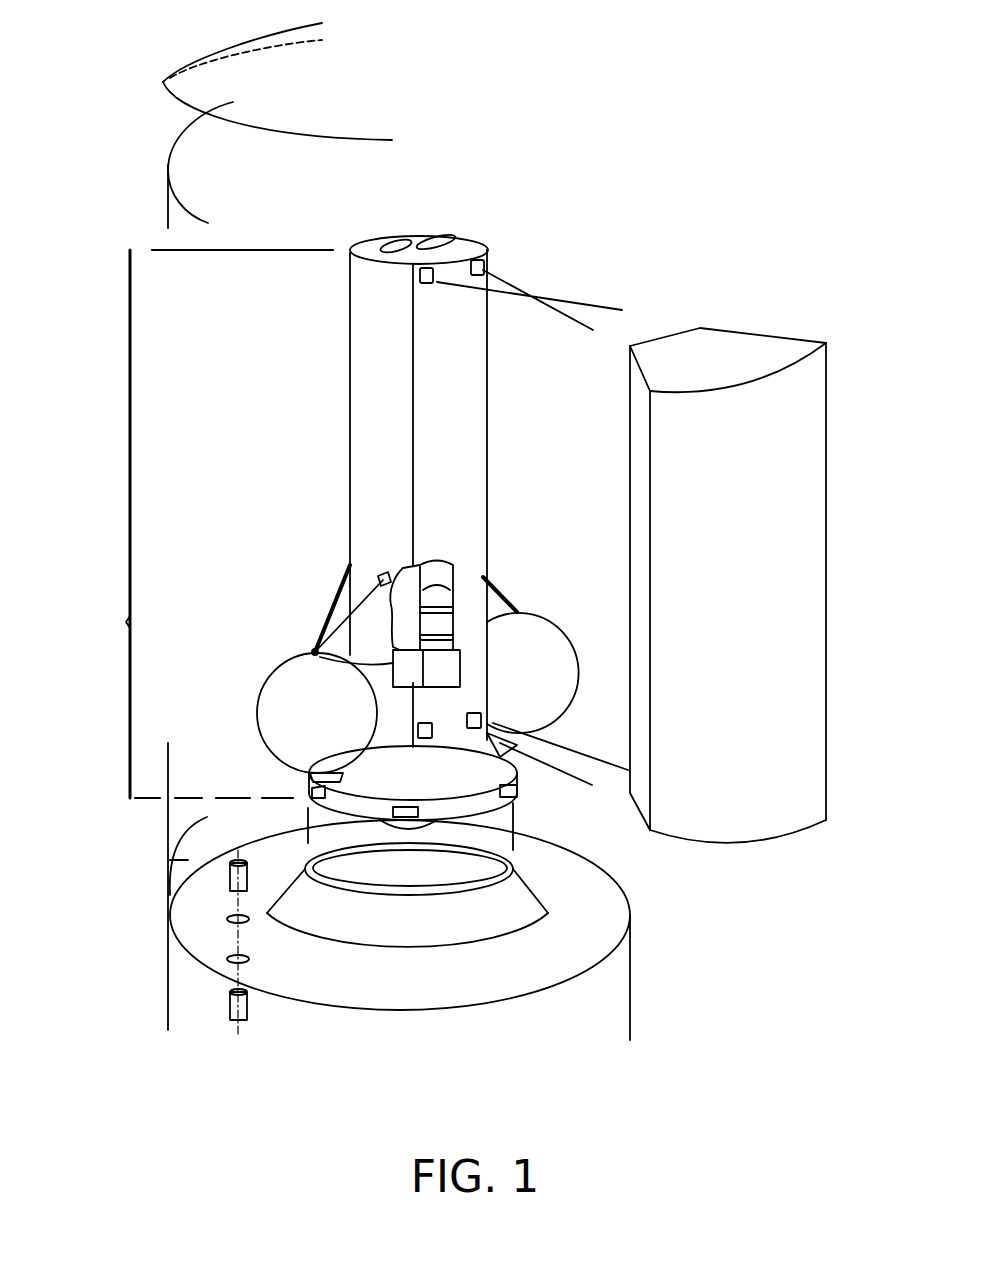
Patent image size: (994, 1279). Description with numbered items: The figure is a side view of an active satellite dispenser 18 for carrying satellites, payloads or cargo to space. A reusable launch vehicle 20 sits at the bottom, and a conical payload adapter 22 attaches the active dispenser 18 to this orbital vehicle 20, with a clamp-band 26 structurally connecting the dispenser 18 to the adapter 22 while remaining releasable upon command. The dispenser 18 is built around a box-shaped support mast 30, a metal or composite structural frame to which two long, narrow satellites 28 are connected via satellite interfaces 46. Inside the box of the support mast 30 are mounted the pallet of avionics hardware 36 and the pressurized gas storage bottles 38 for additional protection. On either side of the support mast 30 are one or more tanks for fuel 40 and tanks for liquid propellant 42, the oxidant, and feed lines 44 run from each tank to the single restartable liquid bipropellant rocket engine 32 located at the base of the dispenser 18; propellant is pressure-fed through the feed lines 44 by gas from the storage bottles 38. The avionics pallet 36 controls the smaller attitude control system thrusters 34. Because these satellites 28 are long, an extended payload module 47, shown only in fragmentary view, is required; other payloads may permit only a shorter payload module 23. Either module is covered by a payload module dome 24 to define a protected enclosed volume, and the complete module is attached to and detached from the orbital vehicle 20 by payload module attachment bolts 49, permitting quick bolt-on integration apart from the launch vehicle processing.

The active satellite dispenser 18 is at (128, 622).
The K-1 reusable launch vehicle 20 is at (632, 948).
The conical payload adapter 22 is at (463, 918).
The shorter payload module 23 is at (168, 815).
The payload module dome 24 is at (163, 82).
The clamp-band 26 is at (495, 883).
The satellite 28 is at (789, 509).
The support mast 30 is at (487, 422).
The engine 32 is at (413, 823).
The attitude control system thrusters 34 is at (520, 793).
The pallet of avionics hardware 36 is at (315, 652).
The pressurized gas storage bottles 38 is at (460, 576).
The tank for fuel 40 is at (305, 731).
The tank for liquid propellant 42 is at (558, 663).
The feed lines 44 is at (337, 595).
The satellite interfaces 46 is at (415, 250).
The extended payload module 47 is at (167, 197).
The payload module attachment bolts 49 is at (228, 870).